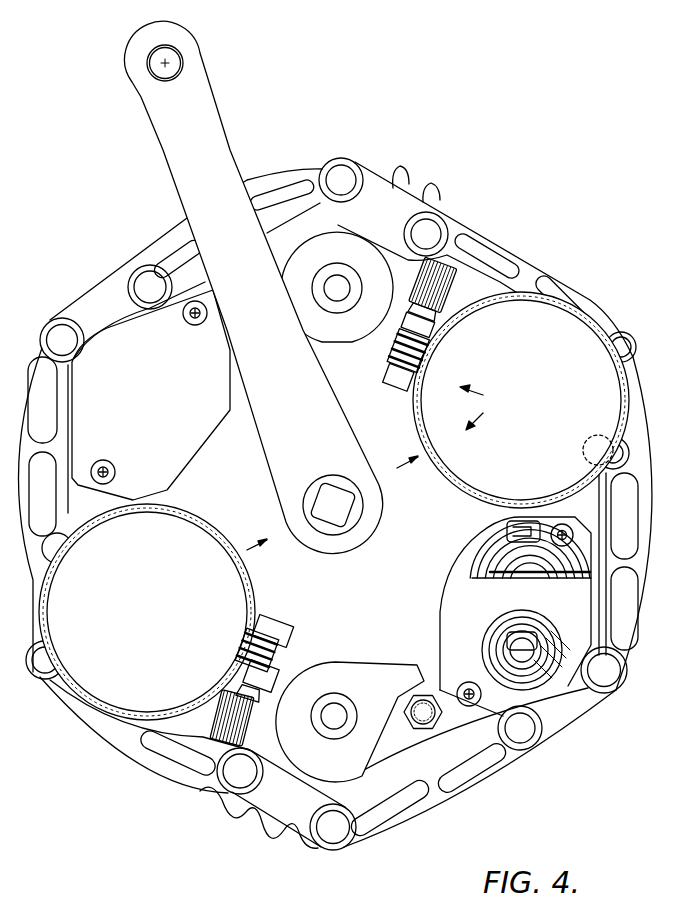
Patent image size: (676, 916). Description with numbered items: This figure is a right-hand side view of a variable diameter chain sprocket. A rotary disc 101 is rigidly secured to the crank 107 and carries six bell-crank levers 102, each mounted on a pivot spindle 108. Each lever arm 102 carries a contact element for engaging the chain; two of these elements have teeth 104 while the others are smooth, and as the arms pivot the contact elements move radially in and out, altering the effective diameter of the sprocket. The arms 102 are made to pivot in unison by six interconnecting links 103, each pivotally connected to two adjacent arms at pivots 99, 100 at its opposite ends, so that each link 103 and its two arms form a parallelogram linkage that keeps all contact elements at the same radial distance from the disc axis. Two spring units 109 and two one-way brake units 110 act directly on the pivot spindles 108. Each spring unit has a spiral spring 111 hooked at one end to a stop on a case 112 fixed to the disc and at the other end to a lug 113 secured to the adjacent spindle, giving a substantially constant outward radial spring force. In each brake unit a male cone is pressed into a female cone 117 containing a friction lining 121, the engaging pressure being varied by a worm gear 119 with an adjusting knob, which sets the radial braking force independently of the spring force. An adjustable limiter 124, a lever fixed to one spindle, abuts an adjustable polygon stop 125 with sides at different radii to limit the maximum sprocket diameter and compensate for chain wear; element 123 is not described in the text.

The pivot 99 is at (345, 175).
The pivot 100 is at (152, 280).
The rotary disc 101 is at (383, 753).
The bell-crank lever 102 is at (105, 307).
The interconnecting link 103 is at (530, 257).
The teeth 104 is at (402, 178).
The crank 107 is at (200, 107).
The pivot spindle 108 is at (333, 290).
The spring unit 109 is at (214, 450).
The one-way brake unit 110 is at (543, 347).
The spiral spring 111 is at (490, 547).
The case 112 is at (453, 633).
The lug 113 is at (523, 650).
The female cone 117 is at (387, 377).
The worm gear 119 is at (432, 284).
The lining 121 is at (486, 407).
The pawl tip 123 is at (399, 736).
The adjustable limiter 124 is at (365, 688).
The adjustable polygon stop 125 is at (430, 726).